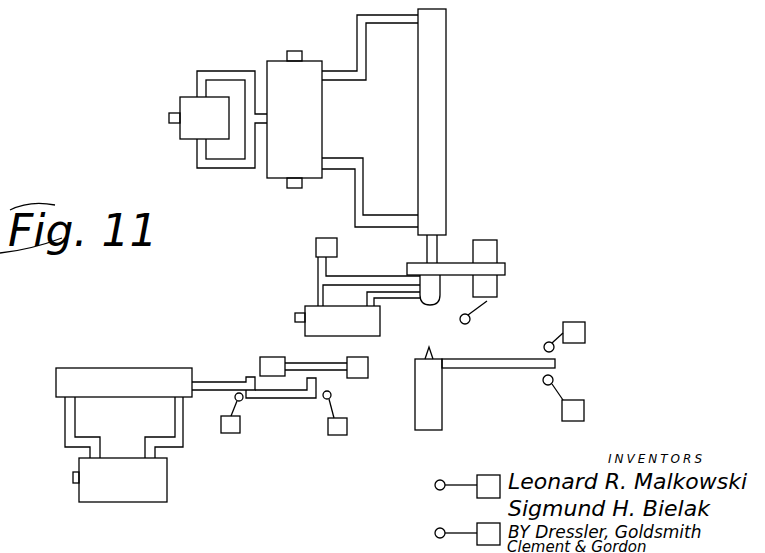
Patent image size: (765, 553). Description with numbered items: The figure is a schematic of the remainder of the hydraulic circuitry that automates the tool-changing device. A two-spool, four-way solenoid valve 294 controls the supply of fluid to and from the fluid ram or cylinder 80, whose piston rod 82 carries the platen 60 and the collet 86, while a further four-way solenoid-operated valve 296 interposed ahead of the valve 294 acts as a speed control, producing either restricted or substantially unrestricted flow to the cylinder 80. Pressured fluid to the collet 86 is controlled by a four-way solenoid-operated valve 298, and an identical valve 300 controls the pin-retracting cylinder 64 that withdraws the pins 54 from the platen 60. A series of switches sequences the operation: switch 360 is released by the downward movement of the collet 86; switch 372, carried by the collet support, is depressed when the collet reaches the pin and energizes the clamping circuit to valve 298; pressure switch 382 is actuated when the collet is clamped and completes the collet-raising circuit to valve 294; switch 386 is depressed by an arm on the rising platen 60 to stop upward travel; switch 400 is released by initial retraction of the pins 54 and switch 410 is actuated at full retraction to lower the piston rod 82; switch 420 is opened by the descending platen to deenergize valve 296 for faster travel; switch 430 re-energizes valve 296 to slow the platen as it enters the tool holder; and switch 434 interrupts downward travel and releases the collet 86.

The two-spool, four-way, solenoid valve 294 is at (275, 60).
The four-way solenoid-operated valve 296 is at (180, 102).
The fluid ram or cylinder 80 is at (447, 145).
The piston rod 82 is at (427, 252).
The switch 360 is at (497, 252).
The switch 372 is at (487, 298).
The collet 86 is at (430, 305).
The pressure switch 382 is at (315, 252).
The four-way solenoid-operated valve 298 is at (305, 308).
The pins 54 is at (296, 356).
The pin-retracting cylinder 64 is at (147, 345).
The four-way solenoid-operated valve 300 is at (157, 503).
The second switch 410 is at (228, 435).
The switch 400 is at (332, 436).
The platen 60 is at (442, 403).
The switch 386 is at (587, 328).
The switch 420 is at (586, 407).
The switch 430 is at (477, 498).
The switch 434 is at (477, 525).